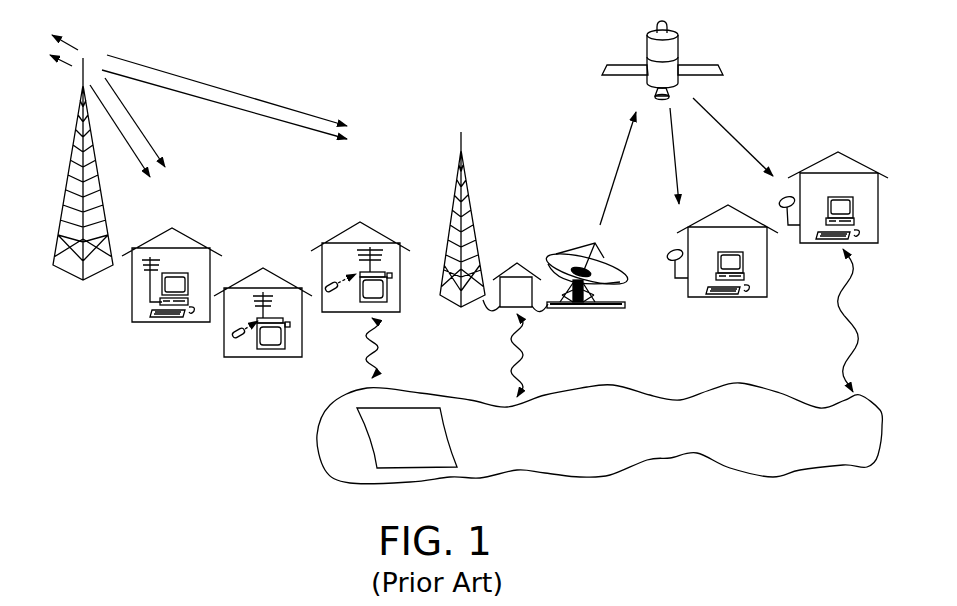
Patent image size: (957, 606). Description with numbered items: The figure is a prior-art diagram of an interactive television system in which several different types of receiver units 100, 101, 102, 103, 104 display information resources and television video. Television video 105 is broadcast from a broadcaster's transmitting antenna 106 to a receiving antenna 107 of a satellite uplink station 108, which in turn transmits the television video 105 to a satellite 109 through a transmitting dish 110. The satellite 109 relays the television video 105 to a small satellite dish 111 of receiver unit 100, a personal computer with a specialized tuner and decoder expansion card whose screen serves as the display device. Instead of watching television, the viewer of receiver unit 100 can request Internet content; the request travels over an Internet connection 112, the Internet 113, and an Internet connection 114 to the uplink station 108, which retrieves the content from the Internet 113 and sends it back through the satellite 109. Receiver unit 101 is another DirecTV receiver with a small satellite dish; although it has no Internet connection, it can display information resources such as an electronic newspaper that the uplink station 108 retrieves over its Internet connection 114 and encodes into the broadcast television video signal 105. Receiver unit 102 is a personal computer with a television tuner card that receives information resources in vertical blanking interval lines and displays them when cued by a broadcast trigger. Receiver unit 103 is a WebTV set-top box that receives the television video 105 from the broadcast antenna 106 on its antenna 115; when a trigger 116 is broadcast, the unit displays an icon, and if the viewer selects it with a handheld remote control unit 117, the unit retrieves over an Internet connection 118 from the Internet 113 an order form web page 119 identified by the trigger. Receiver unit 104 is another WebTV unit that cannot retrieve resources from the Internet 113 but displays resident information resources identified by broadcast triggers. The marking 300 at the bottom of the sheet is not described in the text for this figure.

The receiver unit 100 is at (819, 212).
The receiver unit 101 is at (743, 262).
The receiver unit 102 is at (188, 283).
The receiver unit 103 is at (362, 267).
The receiver unit 104 is at (285, 337).
The television video 105 is at (746, 133).
The transmitting antenna 106 is at (82, 68).
The receiving antenna 107 is at (460, 136).
The satellite uplink station 108 is at (547, 291).
The satellite 109 is at (678, 43).
The transmitting dish 110 is at (597, 269).
The small satellite dish 111 is at (783, 203).
The Internet connection 112 is at (838, 333).
The Internet 113 is at (610, 458).
The Internet connection 114 is at (498, 366).
The antenna 115 is at (380, 253).
The trigger 116 is at (128, 140).
The handheld remote control unit 117 is at (327, 283).
The Internet connection 118 is at (381, 356).
The order form web page 119 is at (470, 444).
The label from adjacent figure 300 is at (729, 594).